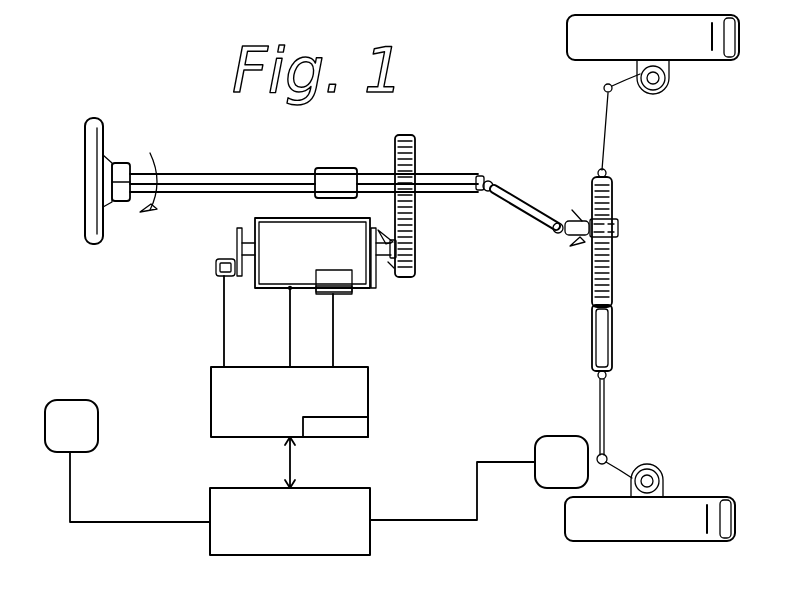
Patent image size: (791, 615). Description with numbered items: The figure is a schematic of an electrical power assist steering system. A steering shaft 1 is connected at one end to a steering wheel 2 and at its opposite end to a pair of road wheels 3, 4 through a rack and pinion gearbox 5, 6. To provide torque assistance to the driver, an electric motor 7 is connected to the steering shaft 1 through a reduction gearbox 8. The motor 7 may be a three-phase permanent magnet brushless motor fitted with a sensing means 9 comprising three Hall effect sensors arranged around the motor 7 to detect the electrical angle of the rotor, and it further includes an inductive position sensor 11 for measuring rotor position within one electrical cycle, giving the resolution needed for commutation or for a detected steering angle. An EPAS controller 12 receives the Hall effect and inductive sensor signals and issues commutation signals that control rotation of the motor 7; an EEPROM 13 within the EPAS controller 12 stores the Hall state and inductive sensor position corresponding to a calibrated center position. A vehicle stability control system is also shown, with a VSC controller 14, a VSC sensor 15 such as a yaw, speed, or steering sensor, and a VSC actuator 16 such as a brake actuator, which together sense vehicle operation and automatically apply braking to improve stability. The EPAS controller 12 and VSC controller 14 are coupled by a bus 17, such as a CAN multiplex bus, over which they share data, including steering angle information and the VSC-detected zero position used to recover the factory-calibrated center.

The steering shaft 1 is at (197, 174).
The steering wheel 2 is at (86, 237).
The road wheel 3 is at (707, 62).
The road wheel 4 is at (693, 496).
The pinion gearbox 5 is at (620, 224).
The rack 6 is at (612, 293).
The electric motor 7 is at (263, 289).
The reduction gearbox 8 is at (414, 234).
The sensing means 9 is at (193, 281).
The inductive position sensor 11 is at (343, 294).
The EPAS controller 12 is at (370, 383).
The EEPROM 13 is at (343, 437).
The VSC controller 14 is at (210, 541).
The VSC sensor 15 is at (44, 441).
The VSC actuator 16 is at (541, 488).
The bus 17 is at (288, 468).